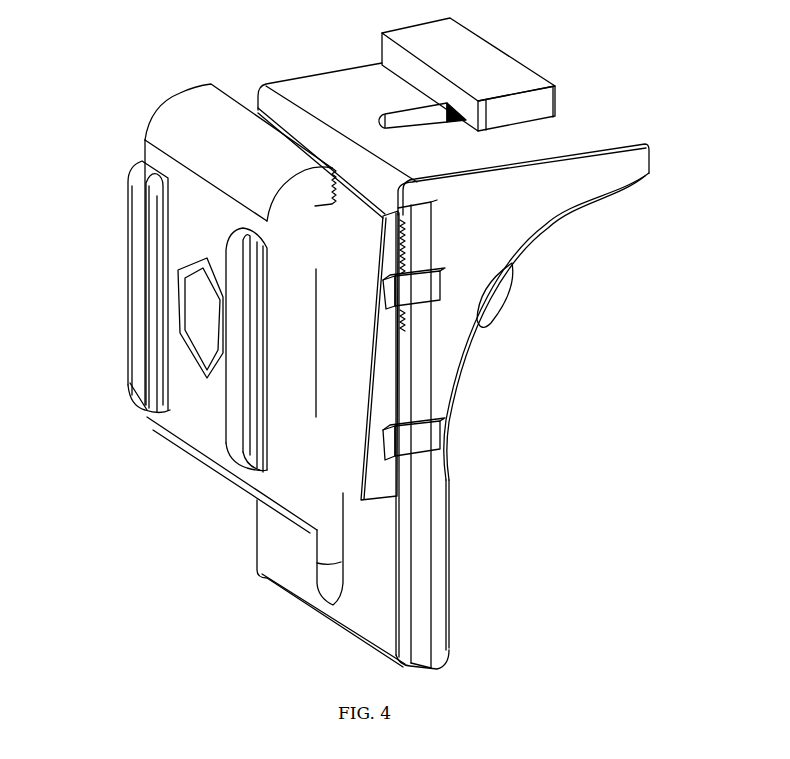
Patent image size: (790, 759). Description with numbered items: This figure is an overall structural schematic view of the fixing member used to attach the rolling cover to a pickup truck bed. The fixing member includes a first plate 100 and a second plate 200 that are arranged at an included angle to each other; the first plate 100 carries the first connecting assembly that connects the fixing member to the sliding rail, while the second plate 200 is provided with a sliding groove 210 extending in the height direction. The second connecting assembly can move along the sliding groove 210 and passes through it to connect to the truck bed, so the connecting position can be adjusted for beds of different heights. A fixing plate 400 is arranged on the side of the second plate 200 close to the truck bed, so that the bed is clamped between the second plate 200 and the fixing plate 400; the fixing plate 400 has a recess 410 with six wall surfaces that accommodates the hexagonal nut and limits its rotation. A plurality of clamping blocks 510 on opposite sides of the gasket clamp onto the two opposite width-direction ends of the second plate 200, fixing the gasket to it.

The first plate 100 is at (598, 178).
The second plate 200 is at (440, 497).
The sliding groove 210 is at (333, 577).
The fixing plate 400 is at (168, 280).
The recess 410 is at (212, 355).
The clamping blocks 510 is at (442, 430).